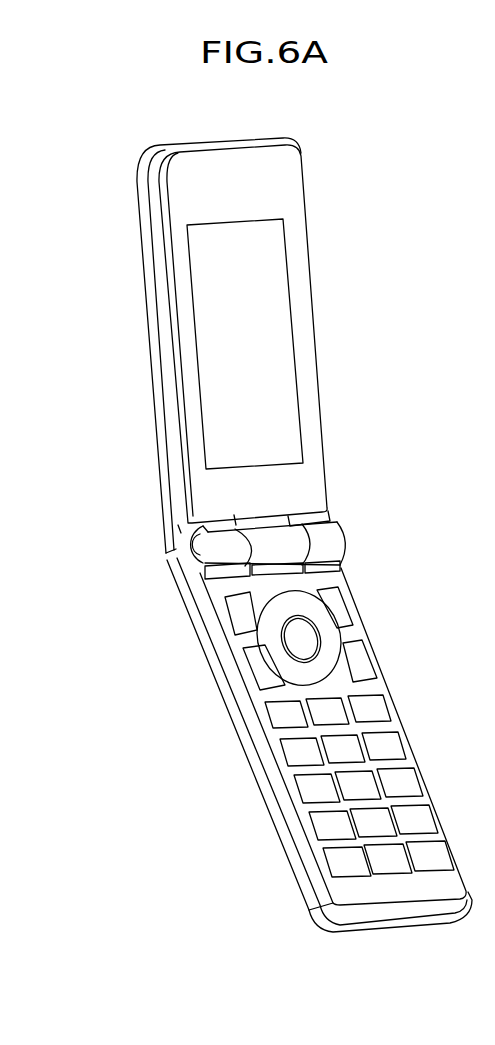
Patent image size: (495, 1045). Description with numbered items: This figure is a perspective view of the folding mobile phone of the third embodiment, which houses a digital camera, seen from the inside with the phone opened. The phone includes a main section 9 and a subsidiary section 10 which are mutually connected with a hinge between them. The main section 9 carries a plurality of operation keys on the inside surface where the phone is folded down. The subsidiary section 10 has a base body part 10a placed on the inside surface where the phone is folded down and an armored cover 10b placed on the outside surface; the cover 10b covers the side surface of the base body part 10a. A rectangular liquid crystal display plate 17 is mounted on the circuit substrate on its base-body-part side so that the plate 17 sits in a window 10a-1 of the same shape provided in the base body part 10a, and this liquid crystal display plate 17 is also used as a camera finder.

The main section 9 is at (205, 730).
The subsidiary section 10 is at (236, 345).
The base body part 10a is at (282, 172).
The window 10a-1 is at (287, 262).
The armored cover 10b is at (155, 219).
The liquid crystal display plate 17 is at (270, 350).